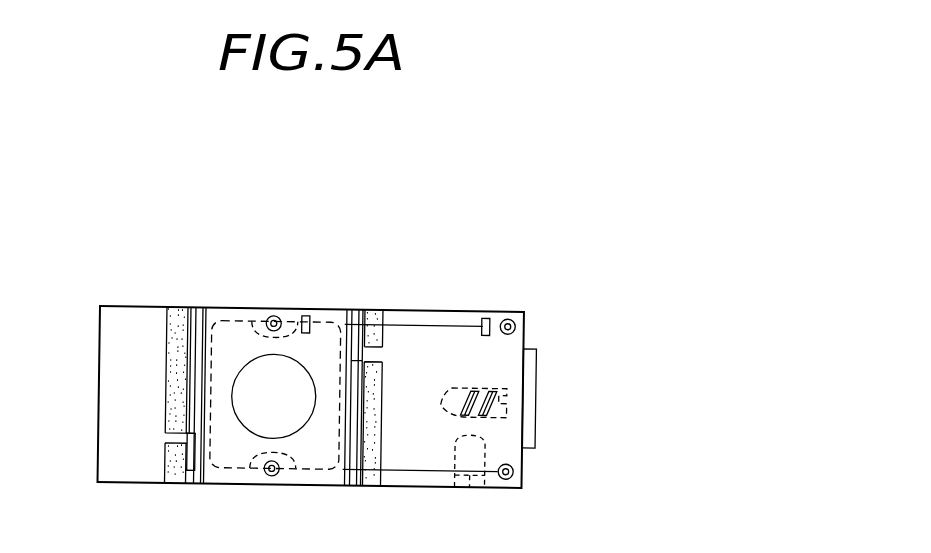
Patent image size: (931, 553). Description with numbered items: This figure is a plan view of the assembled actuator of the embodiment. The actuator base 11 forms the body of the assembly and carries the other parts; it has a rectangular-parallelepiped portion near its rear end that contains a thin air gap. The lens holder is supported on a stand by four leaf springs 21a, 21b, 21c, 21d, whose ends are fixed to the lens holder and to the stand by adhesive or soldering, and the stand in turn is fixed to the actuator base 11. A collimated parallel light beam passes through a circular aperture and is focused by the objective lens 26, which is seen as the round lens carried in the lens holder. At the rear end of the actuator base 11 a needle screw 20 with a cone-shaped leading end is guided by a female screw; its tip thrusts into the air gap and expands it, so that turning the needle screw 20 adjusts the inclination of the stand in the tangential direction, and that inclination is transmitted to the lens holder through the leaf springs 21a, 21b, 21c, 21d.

The actuator base 11 is at (113, 388).
The needle screw 20 is at (510, 393).
The leaf spring 21a is at (440, 318).
The leaf spring 21b is at (420, 470).
The leaf spring 21c is at (275, 395).
The leaf spring 21d is at (274, 395).
The objective lens 26 is at (257, 380).